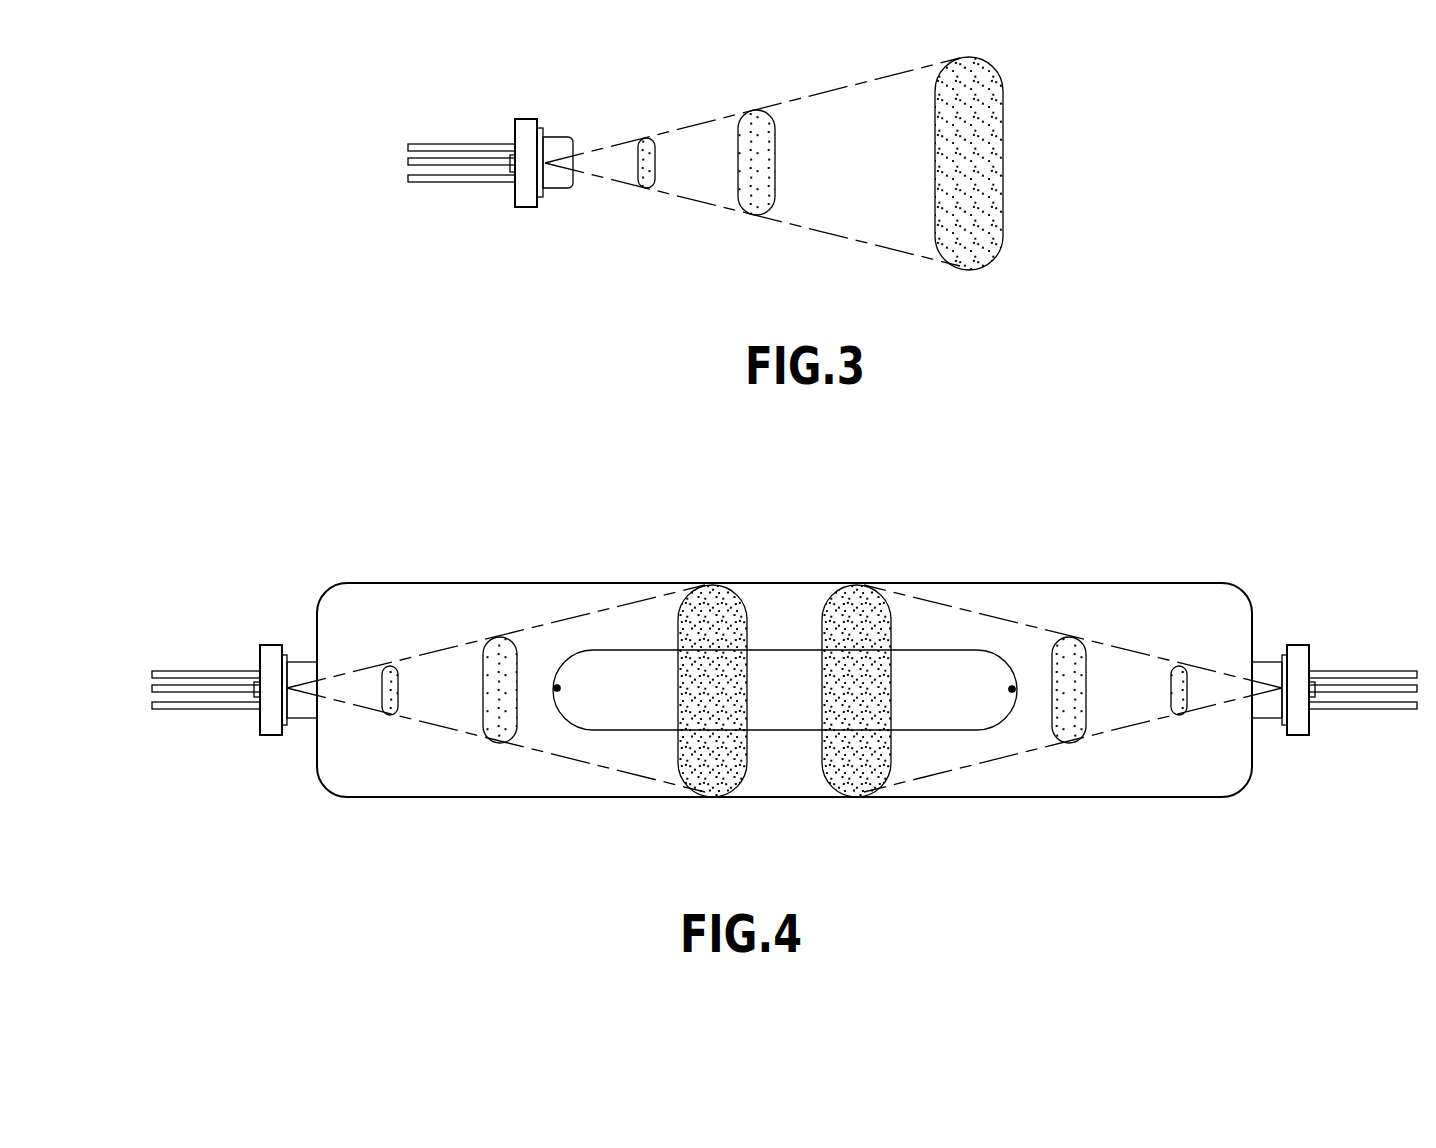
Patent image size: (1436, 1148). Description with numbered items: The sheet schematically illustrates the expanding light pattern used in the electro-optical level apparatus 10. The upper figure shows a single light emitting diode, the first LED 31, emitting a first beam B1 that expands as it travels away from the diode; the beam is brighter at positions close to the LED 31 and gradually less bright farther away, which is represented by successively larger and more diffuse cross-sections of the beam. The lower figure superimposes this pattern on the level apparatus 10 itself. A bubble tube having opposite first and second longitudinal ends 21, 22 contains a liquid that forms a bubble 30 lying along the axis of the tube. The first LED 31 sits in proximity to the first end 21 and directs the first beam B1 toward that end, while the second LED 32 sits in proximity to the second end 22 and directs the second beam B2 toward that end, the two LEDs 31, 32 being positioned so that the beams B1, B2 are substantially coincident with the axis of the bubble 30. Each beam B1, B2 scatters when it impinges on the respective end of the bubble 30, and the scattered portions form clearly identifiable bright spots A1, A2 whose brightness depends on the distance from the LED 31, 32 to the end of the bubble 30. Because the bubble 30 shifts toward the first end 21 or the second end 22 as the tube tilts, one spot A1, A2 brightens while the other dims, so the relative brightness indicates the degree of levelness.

In FIG. 4, the electro-optical level apparatus 10 is at (362, 518).
In FIG. 4, the first longitudinal end 21 is at (315, 747).
In FIG. 4, the second longitudinal end 22 is at (1255, 747).
In FIG. 4, the bubble 30 is at (937, 650).
In FIG. 3, the first light emitting diode 31 is at (527, 119).
In FIG. 4, the first light emitting diode 31 is at (268, 645).
In FIG. 4, the second light emitting diode 32 is at (1300, 645).
In FIG. 3, the first beam B1 is at (828, 90).
In FIG. 4, the first beam B1 is at (530, 627).
In FIG. 4, the second beam B2 is at (1043, 628).
In FIG. 4, the first bright spot A1 is at (557, 688).
In FIG. 4, the second bright spot A2 is at (1012, 689).